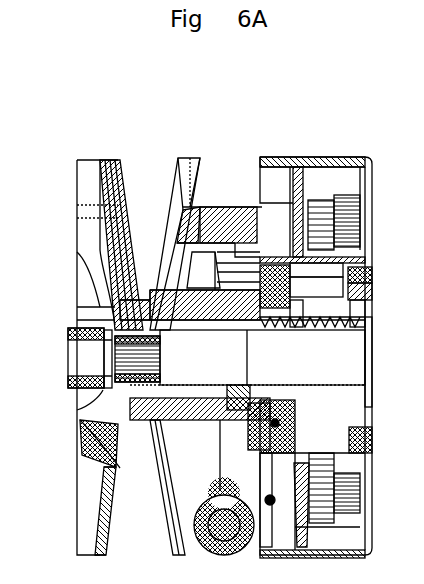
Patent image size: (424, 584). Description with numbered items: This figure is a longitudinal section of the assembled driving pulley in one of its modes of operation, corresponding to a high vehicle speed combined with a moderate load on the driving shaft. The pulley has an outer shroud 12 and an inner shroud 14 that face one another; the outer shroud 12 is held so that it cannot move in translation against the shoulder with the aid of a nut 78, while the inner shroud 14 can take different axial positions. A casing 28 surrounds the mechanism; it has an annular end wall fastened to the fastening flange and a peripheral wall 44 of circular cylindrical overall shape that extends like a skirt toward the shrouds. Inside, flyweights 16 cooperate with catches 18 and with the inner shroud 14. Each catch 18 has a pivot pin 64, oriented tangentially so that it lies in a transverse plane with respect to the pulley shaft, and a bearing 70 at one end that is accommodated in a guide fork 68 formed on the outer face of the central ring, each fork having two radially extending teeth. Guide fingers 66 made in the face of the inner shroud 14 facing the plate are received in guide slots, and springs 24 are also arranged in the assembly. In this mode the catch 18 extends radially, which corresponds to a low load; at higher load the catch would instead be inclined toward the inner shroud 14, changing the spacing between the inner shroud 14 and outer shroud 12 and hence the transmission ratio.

The outer shroud 12 is at (100, 185).
The inner shroud 14 is at (188, 175).
The guide finger 66 is at (216, 217).
The peripheral wall 44 is at (283, 158).
The springs 24 is at (346, 196).
The casing 28 is at (370, 201).
The bearing 70 is at (262, 470).
The guide fork 68 is at (326, 420).
The nut 78 is at (72, 396).
The catch 18 is at (258, 468).
The pivot pin 64 is at (270, 500).
The flyweights 16 is at (195, 483).